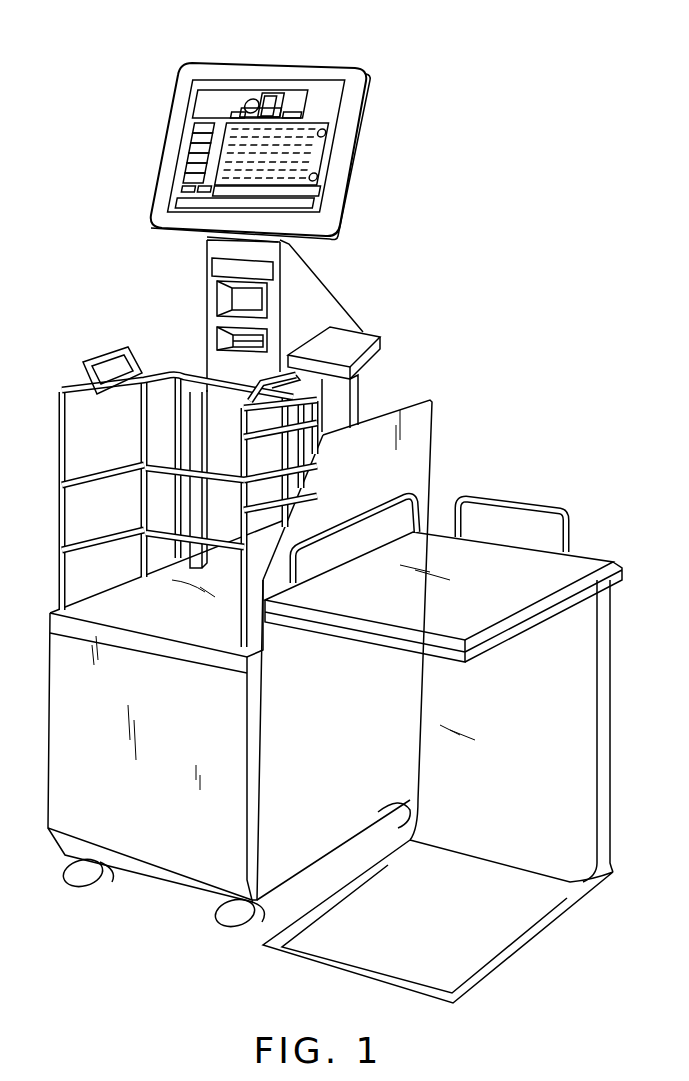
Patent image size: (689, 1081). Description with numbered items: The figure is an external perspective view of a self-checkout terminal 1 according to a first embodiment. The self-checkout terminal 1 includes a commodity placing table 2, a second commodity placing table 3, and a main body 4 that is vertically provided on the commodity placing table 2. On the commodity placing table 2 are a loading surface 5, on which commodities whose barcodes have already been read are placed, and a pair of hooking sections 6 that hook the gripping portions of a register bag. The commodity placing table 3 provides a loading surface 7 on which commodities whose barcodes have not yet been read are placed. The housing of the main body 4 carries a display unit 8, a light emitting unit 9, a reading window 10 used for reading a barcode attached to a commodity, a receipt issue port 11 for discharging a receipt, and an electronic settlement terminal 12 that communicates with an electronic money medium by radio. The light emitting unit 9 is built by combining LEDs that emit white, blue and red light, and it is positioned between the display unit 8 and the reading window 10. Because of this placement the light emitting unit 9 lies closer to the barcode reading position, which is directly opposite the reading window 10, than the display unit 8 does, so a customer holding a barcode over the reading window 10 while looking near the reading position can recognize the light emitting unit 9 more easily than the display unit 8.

The self-checkout terminal 1 is at (565, 185).
The commodity placing table 2 is at (60, 742).
The commodity placing table 3 is at (613, 698).
The main body 4 is at (332, 264).
The loading surface 5 is at (107, 612).
The hooking sections 6 is at (252, 389).
The loading surface 7 is at (572, 567).
The display unit 8 is at (293, 79).
The light emitting unit 9 is at (218, 270).
The reading window 10 is at (237, 298).
The receipt issue port 11 is at (222, 337).
The electronic settlement terminal 12 is at (347, 338).